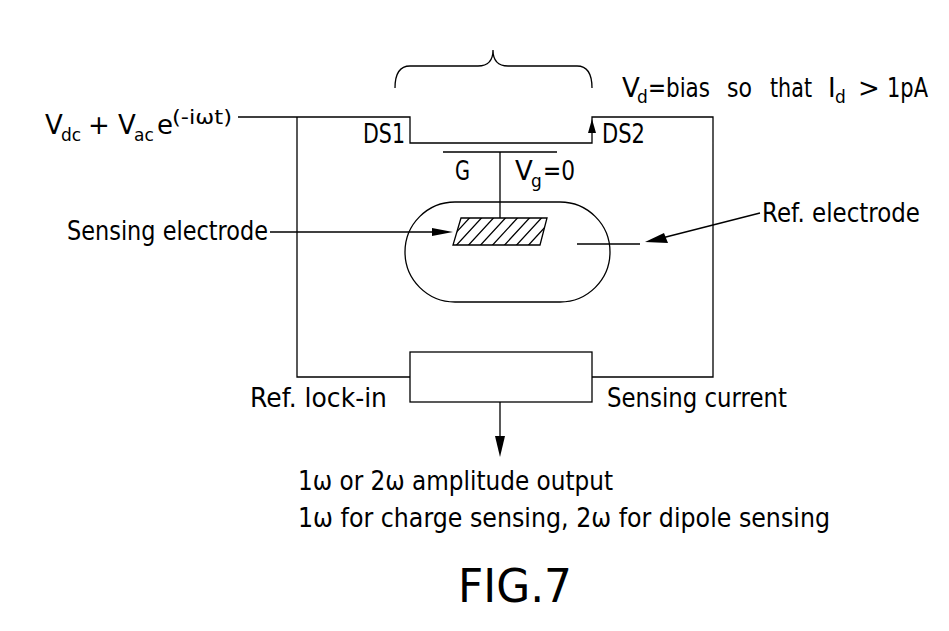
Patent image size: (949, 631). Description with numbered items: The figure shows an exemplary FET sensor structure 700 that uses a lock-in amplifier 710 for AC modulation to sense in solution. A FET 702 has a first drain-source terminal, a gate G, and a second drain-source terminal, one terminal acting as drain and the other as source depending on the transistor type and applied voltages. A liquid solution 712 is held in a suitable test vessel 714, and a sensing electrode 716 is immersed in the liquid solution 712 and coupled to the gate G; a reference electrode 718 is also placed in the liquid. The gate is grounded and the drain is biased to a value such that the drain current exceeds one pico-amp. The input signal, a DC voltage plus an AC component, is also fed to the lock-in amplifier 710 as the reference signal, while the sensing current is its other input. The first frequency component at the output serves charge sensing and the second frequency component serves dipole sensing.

The FET sensor structure 700 is at (216, 505).
The FET 702 is at (493, 48).
The lock-in amplifier 710 is at (593, 363).
The liquid solution 712 is at (582, 278).
The test vessel 714 is at (423, 202).
The sensing electrode 716 is at (461, 246).
The reference electrode 718 is at (619, 243).